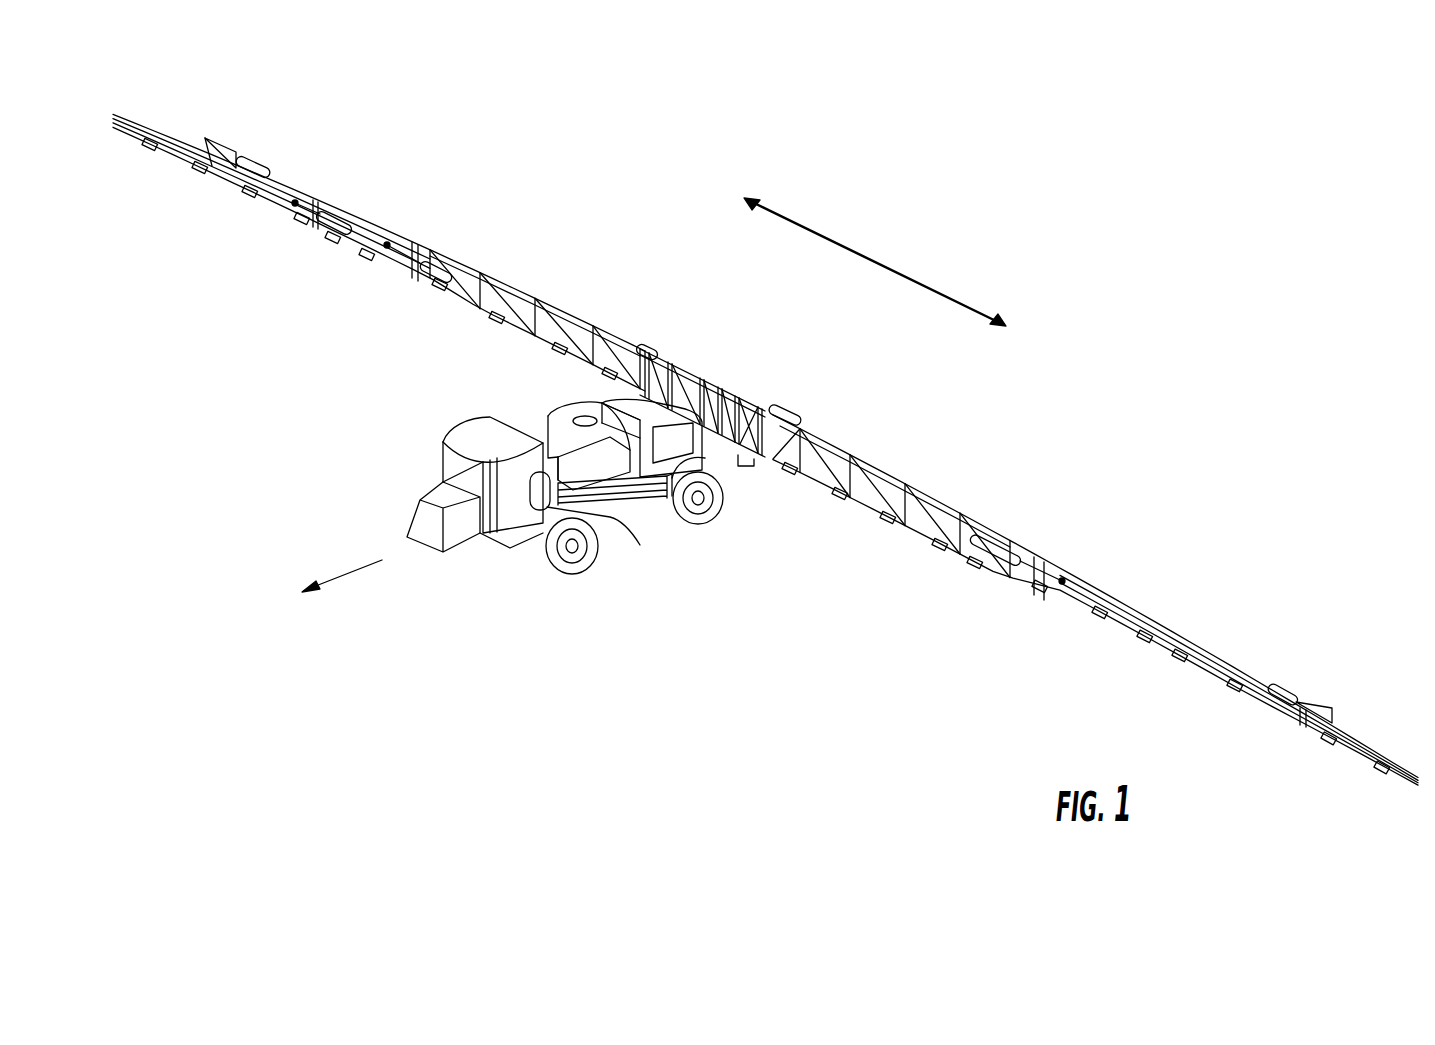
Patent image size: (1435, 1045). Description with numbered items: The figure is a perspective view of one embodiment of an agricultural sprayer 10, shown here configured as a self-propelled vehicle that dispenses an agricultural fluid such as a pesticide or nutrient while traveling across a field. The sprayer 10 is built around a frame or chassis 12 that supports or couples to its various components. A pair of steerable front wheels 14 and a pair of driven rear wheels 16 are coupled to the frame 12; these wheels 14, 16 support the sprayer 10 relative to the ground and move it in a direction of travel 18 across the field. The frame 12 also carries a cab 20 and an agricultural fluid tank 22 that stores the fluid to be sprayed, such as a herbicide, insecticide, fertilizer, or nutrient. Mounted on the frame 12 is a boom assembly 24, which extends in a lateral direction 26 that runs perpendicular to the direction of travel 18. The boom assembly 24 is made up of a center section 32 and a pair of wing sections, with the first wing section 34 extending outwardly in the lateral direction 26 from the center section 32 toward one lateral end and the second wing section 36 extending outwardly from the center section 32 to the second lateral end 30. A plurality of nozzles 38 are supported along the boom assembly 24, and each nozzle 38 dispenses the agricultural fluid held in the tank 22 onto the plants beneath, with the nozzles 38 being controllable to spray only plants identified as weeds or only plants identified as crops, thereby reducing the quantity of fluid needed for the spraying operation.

The agricultural sprayer 10 is at (182, 106).
The frame 12 is at (612, 505).
The front wheels 14 is at (568, 576).
The rear wheels 16 is at (695, 530).
The direction of travel 18 is at (355, 573).
The cab 20 is at (468, 440).
The agricultural fluid tank 22 is at (540, 440).
The boom assembly 24 is at (820, 407).
The lateral direction 26 is at (925, 288).
The second lateral end 30 is at (96, 128).
The center section 32 is at (722, 378).
The first wing section 34 is at (1090, 580).
The second wing section 36 is at (510, 284).
The nozzles 38 is at (368, 258).